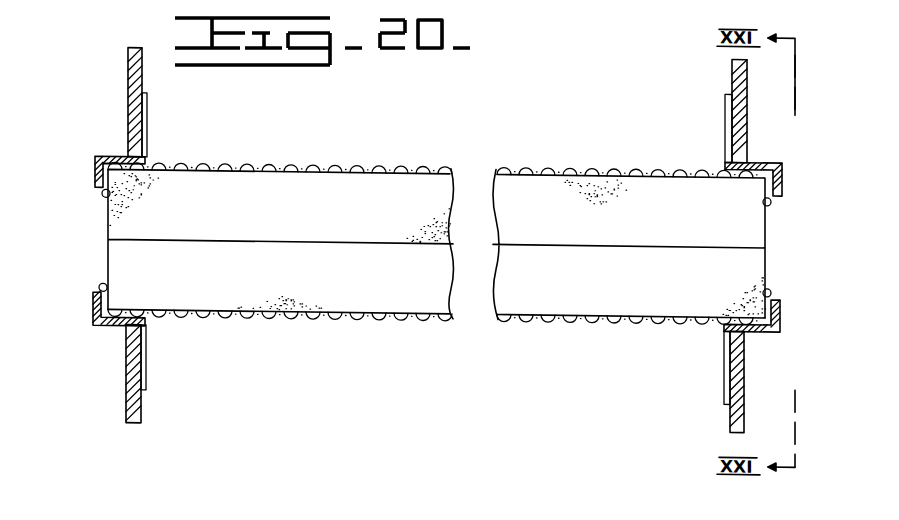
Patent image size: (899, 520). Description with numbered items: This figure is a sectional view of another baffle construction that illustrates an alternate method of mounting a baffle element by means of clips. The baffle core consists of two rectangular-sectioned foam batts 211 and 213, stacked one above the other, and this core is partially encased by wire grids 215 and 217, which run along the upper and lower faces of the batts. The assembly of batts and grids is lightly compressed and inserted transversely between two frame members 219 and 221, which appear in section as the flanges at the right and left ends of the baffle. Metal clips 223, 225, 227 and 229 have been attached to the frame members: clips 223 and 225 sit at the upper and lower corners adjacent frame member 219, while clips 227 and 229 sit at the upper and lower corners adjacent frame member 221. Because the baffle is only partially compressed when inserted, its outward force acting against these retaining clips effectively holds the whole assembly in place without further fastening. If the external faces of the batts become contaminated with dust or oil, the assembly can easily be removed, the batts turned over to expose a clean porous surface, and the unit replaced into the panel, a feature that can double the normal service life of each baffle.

The foam batt 211 is at (447, 179).
The foam batt 213 is at (450, 294).
The wire grid 215 is at (280, 166).
The wire grid 217 is at (583, 312).
The frame member 219 is at (735, 58).
The frame member 221 is at (133, 70).
The metal clip 223 is at (780, 174).
The metal clip 225 is at (782, 303).
The metal clip 227 is at (97, 181).
The metal clip 229 is at (93, 305).